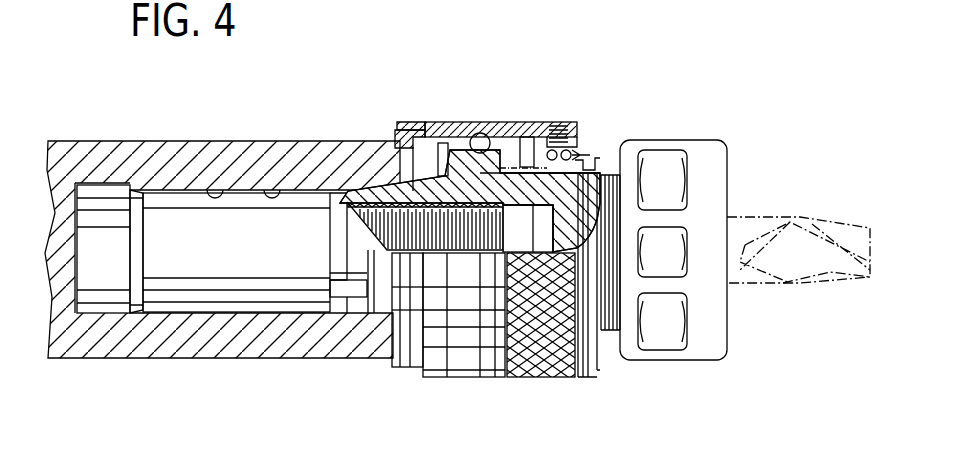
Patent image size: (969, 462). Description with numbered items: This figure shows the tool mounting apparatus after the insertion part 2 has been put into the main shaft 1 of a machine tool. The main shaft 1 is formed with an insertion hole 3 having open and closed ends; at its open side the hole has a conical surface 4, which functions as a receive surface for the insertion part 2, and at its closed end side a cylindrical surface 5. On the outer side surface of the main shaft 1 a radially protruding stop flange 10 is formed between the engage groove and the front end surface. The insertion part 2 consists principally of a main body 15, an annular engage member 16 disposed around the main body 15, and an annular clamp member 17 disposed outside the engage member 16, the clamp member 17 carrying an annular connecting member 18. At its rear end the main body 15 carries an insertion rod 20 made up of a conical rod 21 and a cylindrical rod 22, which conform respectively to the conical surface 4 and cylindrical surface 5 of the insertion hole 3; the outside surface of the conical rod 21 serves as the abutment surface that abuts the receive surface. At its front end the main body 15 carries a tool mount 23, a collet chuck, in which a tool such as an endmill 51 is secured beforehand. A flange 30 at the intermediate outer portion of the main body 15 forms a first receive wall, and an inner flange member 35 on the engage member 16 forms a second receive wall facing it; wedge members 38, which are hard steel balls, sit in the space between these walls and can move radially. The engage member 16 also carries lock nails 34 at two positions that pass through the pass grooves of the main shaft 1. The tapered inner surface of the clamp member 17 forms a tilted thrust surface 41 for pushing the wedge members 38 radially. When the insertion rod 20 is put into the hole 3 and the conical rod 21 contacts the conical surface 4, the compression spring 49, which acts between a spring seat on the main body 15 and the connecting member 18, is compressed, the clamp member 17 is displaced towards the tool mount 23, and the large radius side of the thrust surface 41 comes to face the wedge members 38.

The main shaft 1 is at (184, 141).
The insertion part 2 is at (580, 366).
The insertion hole 3 is at (272, 190).
The conical surface 4 is at (357, 190).
The cylindrical surface 5 is at (216, 190).
The stop flange 10 is at (425, 140).
The main body 15 is at (408, 350).
The annular engage member 16 is at (438, 200).
The annular clamp member 17 is at (542, 135).
The annular connecting member 18 is at (585, 150).
The insertion rod 20 is at (302, 300).
The conical rod 21 is at (380, 290).
The cylindrical rod 22 is at (237, 290).
The tool mount 23 is at (719, 144).
The flange 30 is at (448, 290).
The lock nails 34 is at (405, 135).
The inner flange member 35 is at (495, 290).
The wedge members 38 is at (483, 133).
The thrust surface 41 is at (527, 137).
The compression spring 49 is at (590, 157).
The endmill 51 is at (760, 216).